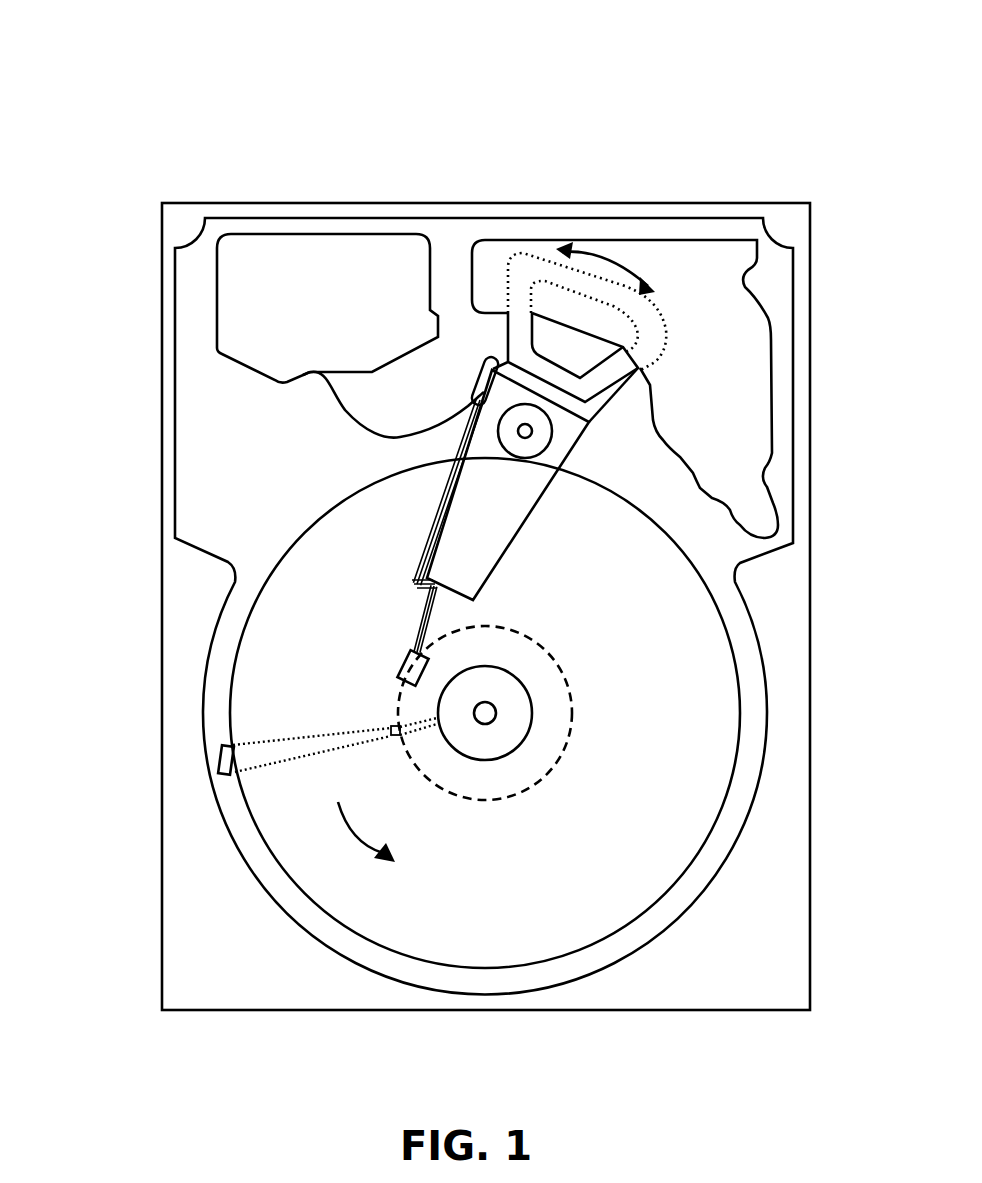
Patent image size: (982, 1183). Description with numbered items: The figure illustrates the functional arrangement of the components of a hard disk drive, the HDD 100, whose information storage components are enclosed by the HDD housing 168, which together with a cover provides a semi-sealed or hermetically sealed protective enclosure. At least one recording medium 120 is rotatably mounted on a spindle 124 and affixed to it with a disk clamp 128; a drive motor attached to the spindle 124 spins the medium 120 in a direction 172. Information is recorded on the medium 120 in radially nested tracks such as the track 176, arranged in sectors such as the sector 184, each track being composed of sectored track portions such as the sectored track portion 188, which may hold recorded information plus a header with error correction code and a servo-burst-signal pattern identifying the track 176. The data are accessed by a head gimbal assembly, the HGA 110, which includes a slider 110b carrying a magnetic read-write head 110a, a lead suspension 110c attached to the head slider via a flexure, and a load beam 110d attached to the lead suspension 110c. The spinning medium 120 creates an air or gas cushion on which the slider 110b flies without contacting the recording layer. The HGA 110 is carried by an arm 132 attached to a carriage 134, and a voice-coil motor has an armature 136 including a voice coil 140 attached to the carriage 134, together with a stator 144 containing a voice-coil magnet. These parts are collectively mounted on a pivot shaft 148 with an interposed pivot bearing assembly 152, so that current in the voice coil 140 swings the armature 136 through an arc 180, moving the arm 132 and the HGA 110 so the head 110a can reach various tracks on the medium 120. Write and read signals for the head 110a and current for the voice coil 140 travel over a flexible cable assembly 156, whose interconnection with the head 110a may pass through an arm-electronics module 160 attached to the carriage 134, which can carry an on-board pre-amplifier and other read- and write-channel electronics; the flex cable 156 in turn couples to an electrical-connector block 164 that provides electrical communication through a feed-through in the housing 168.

The HDD 100 is at (95, 93).
The HDD housing 168 is at (792, 215).
The electrical-connector block 164 is at (242, 305).
The flexible cable assembly 156 is at (345, 408).
The stator 144 is at (738, 333).
The arc 180 is at (603, 258).
The armature 136 is at (503, 347).
The voice coil 140 is at (520, 323).
The arm 132 is at (480, 548).
The carriage 134 is at (547, 467).
The pivot bearing assembly 152 is at (540, 443).
The pivot shaft 148 is at (530, 432).
The arm-electronics module 160 is at (478, 391).
The head gimbal assembly 110 is at (253, 542).
The magnetic read-write head 110a is at (390, 686).
The slider 110b is at (405, 657).
The lead suspension 110c is at (427, 640).
The load beam 110d is at (423, 593).
The recording medium 120 is at (668, 665).
The track 176 is at (560, 673).
The disk clamp 128 is at (510, 730).
The spindle 124 is at (496, 713).
The direction 172 is at (373, 838).
The sector 184 is at (218, 750).
The sectored track portion 188 is at (392, 727).